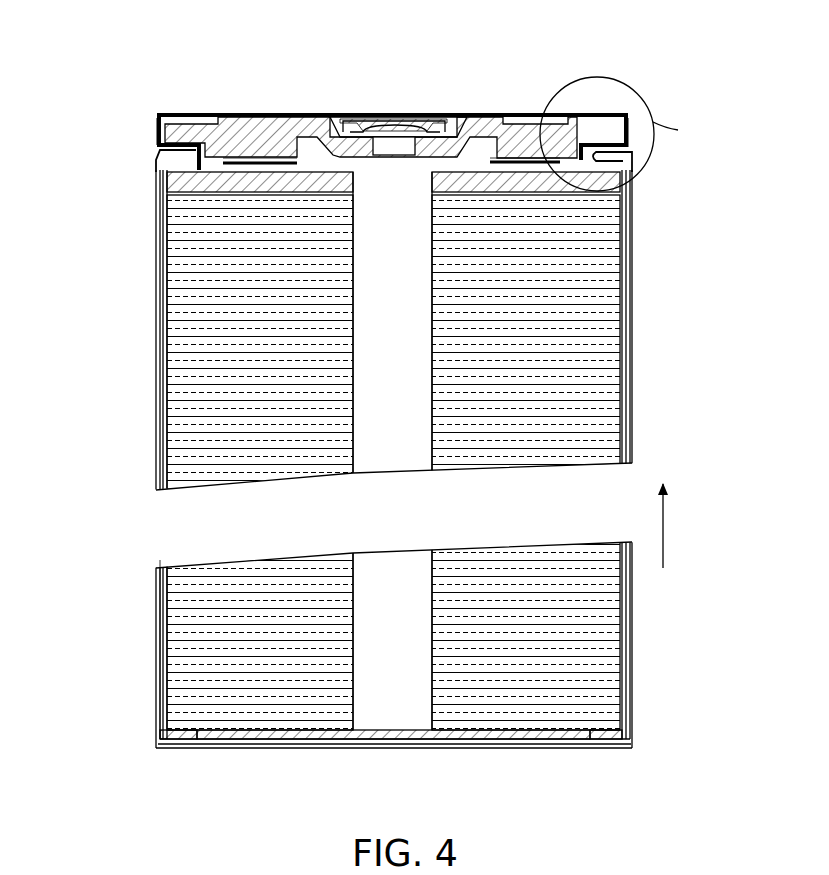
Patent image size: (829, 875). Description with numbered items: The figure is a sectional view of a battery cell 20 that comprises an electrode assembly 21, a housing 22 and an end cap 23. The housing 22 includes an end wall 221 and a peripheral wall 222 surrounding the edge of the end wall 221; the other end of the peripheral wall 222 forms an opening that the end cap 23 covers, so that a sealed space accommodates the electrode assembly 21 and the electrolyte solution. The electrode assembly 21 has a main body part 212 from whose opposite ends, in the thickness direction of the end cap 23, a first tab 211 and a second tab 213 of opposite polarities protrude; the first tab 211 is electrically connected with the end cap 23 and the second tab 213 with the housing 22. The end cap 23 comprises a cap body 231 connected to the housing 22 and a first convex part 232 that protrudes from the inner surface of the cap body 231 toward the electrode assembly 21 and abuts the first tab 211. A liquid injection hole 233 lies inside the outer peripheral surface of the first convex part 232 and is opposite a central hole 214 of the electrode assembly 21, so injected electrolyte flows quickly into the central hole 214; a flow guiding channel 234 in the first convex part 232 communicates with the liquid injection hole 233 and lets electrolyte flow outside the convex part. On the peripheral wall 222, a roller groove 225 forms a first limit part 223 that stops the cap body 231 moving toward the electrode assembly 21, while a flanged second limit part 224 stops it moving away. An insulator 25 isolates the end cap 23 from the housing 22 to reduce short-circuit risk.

The battery cell 20 is at (436, 88).
The electrode assembly 21 is at (156, 415).
The housing 22 is at (642, 375).
The end cap 23 is at (407, 150).
The insulator 25 is at (157, 128).
The first tab 211 is at (343, 175).
The main body part 212 is at (205, 447).
The second tab 213 is at (560, 737).
The central hole 214 is at (412, 717).
The end wall 221 is at (540, 115).
The peripheral wall 222 is at (155, 648).
The first limit part 223 is at (158, 150).
The second limit part 224 is at (175, 113).
The roller groove 225 is at (628, 156).
The cap body 231 is at (222, 162).
The first convex part 232 is at (268, 147).
The liquid injection hole 233 is at (400, 147).
The flow guiding channel 234 is at (507, 167).